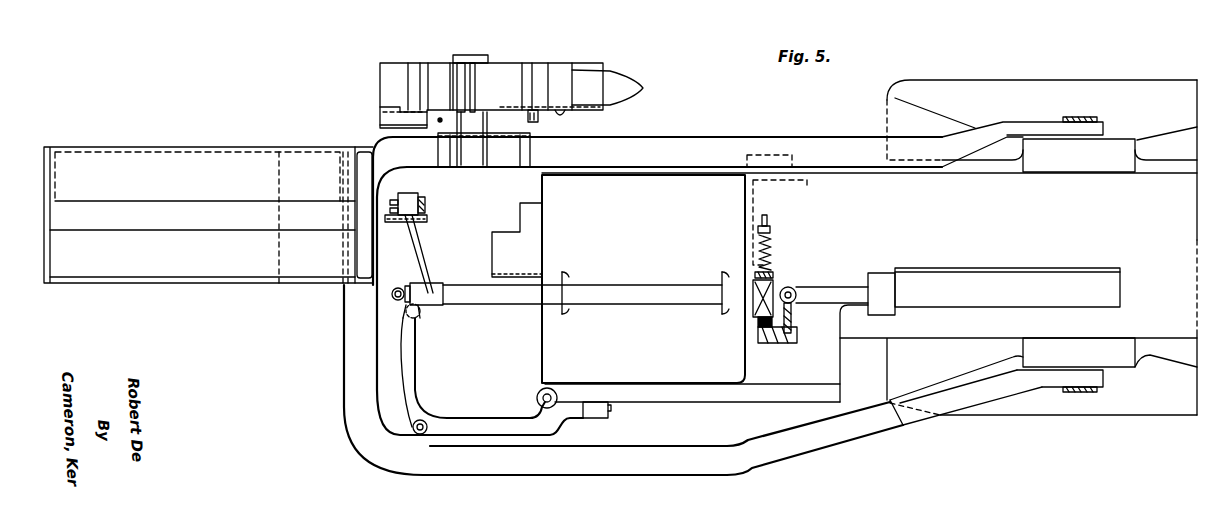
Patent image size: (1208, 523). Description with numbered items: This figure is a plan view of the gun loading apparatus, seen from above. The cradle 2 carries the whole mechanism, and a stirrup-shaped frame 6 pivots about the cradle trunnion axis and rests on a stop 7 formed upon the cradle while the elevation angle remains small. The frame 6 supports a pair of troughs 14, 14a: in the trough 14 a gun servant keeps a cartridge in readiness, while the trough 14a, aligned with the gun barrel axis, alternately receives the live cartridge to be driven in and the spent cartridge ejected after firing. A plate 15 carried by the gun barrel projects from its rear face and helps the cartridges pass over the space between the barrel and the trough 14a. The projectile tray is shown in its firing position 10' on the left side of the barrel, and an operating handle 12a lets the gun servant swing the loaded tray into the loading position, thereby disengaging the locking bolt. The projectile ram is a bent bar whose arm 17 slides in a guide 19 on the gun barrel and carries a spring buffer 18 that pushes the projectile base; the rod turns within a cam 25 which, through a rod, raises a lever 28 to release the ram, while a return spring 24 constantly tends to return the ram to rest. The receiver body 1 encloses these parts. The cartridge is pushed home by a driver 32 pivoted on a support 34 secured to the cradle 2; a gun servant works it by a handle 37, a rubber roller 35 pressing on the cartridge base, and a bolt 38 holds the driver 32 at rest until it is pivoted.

The receiver box 1 is at (548, 191).
The cradle 2 is at (830, 363).
The frame 6 is at (663, 148).
The stop 7 is at (777, 155).
The projectile tray firing position 10' is at (491, 82).
The operating handle 12a is at (486, 61).
The trough 14 is at (242, 152).
The trough 14a is at (230, 268).
The plate 15 is at (513, 240).
The arm of the ram bar 17 is at (420, 238).
The spring buffer 18 is at (413, 198).
The guide 19 is at (550, 308).
The return spring 24 is at (771, 241).
The cam 25 is at (762, 307).
The lever 28 is at (789, 317).
The driver 32 is at (408, 395).
The support 34 is at (682, 397).
The rubber roller 35 is at (426, 310).
The handle 37 is at (413, 428).
The bolt 38 is at (586, 405).